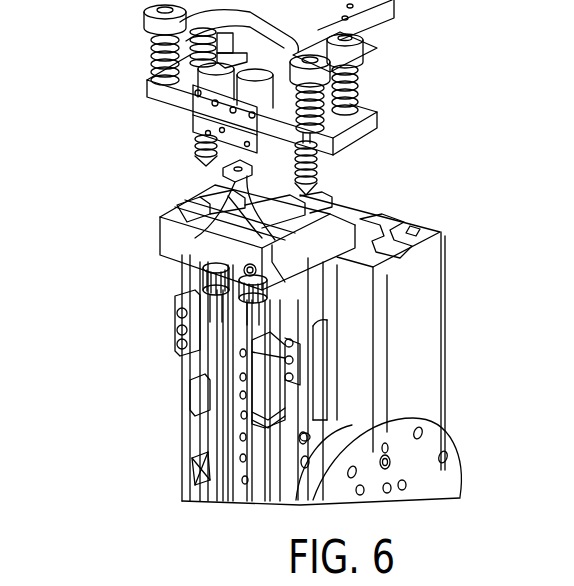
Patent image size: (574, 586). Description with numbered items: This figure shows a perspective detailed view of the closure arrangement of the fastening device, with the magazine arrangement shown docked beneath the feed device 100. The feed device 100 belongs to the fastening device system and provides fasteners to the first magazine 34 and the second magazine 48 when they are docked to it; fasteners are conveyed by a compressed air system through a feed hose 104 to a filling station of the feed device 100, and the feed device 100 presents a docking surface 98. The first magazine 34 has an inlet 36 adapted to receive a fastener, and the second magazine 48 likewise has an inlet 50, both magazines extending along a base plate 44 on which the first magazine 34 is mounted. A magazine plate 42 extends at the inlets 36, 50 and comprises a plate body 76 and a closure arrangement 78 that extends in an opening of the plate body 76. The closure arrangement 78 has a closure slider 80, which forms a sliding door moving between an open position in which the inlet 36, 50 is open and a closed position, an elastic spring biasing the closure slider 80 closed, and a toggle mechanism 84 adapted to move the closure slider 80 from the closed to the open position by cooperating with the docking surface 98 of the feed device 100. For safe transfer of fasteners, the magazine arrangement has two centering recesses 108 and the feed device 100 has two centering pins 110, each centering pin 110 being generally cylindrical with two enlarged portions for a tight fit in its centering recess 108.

The feed device 100 is at (423, 38).
The feed hose 104 is at (183, 62).
The docking surface 98 is at (352, 124).
The centering pin 110 is at (320, 166).
The closure arrangement 78 is at (183, 170).
The magazine plate 42 is at (166, 253).
The plate body 76 is at (160, 235).
The closure slider 80 is at (300, 210).
The centering recess 108 is at (385, 250).
The inlet 50 is at (215, 272).
The toggle mechanism 84 is at (230, 276).
The inlet 36 is at (262, 270).
The base plate 44 is at (180, 388).
The second magazine 48 is at (290, 447).
The first magazine 34 is at (197, 477).